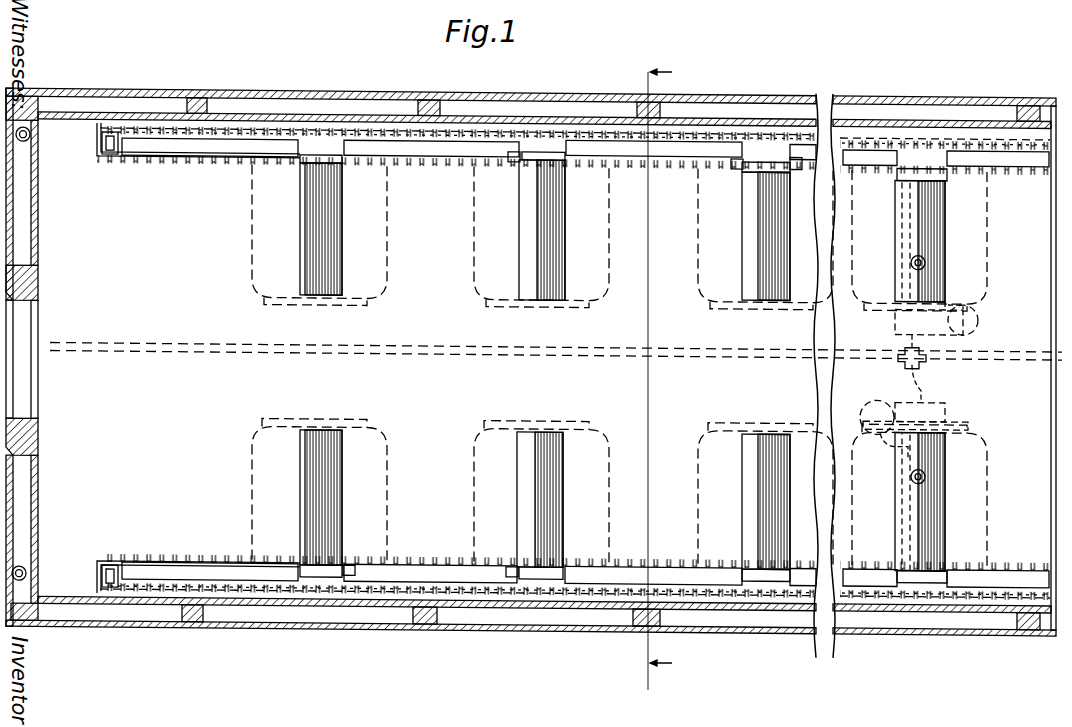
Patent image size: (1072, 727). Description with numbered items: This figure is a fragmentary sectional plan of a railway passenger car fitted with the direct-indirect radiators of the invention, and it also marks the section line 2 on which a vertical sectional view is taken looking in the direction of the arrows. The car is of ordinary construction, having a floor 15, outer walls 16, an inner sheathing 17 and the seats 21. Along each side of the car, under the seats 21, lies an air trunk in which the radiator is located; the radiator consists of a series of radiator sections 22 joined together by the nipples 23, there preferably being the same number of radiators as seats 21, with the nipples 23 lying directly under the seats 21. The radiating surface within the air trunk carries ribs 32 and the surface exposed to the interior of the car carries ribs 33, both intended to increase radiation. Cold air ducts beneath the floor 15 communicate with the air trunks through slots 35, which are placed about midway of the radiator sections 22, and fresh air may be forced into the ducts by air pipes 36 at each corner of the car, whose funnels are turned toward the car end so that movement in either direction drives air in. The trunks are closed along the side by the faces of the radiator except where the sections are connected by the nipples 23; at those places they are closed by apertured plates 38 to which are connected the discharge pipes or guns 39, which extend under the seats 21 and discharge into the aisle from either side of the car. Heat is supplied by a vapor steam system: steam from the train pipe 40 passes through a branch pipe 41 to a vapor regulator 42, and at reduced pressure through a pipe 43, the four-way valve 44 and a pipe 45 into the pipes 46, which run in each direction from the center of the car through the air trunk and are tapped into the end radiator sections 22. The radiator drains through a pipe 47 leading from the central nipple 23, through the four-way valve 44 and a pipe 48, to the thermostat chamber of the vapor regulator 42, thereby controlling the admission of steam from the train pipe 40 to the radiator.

The floor 15 is at (531, 373).
The outer walls 16 is at (458, 92).
The inner sheathing 17 is at (745, 119).
The seats 21 is at (700, 300).
The radiator sections 22 is at (192, 138).
The nipples 23 is at (322, 150).
The ribs 32 is at (862, 140).
The ribs 33 is at (196, 166).
The slots 35 is at (212, 115).
The air pipes 36 is at (748, 168).
The plates 38 is at (515, 163).
The discharge pipes or guns 39 is at (300, 250).
The train pipe 40 is at (598, 346).
The branch pipe 41 is at (905, 340).
The vapor regulator 42 is at (978, 322).
The pipe 43 is at (895, 292).
The four-way valve 44 is at (926, 262).
The pipe 45 is at (910, 208).
The pipes 46 is at (140, 133).
The pipe 47 is at (950, 216).
The pipe 48 is at (965, 292).
The section line 2— 2 is at (657, 380).